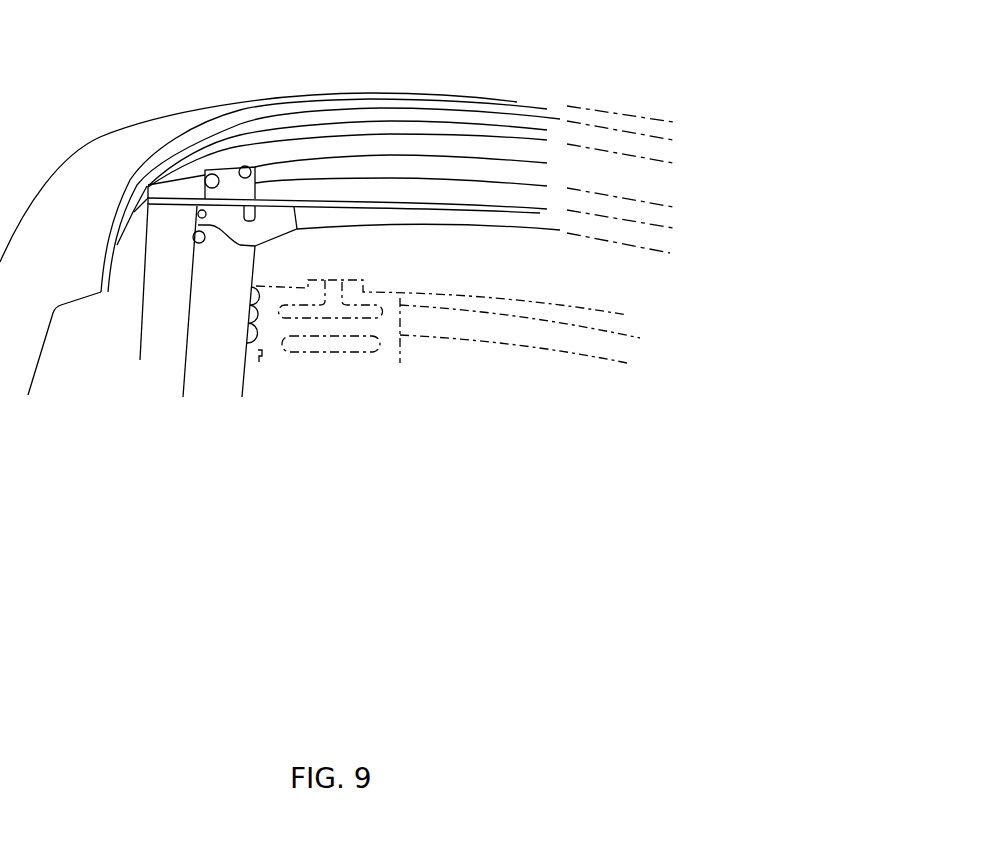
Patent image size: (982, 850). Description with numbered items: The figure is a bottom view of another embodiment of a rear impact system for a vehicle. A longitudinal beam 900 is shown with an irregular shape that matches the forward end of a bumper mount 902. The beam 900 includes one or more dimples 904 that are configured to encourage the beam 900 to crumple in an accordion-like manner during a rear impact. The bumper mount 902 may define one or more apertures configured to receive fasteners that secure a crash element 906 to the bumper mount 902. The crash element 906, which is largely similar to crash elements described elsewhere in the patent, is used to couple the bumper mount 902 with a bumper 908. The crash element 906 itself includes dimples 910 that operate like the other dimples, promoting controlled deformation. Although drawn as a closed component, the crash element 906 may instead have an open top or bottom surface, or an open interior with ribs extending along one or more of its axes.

The longitudinal beam 900 is at (225, 365).
The bumper mount 902 is at (270, 229).
The dimples 904 is at (197, 240).
The crash element 906 is at (230, 173).
The bumper 908 is at (395, 137).
The dimples 910 is at (205, 175).